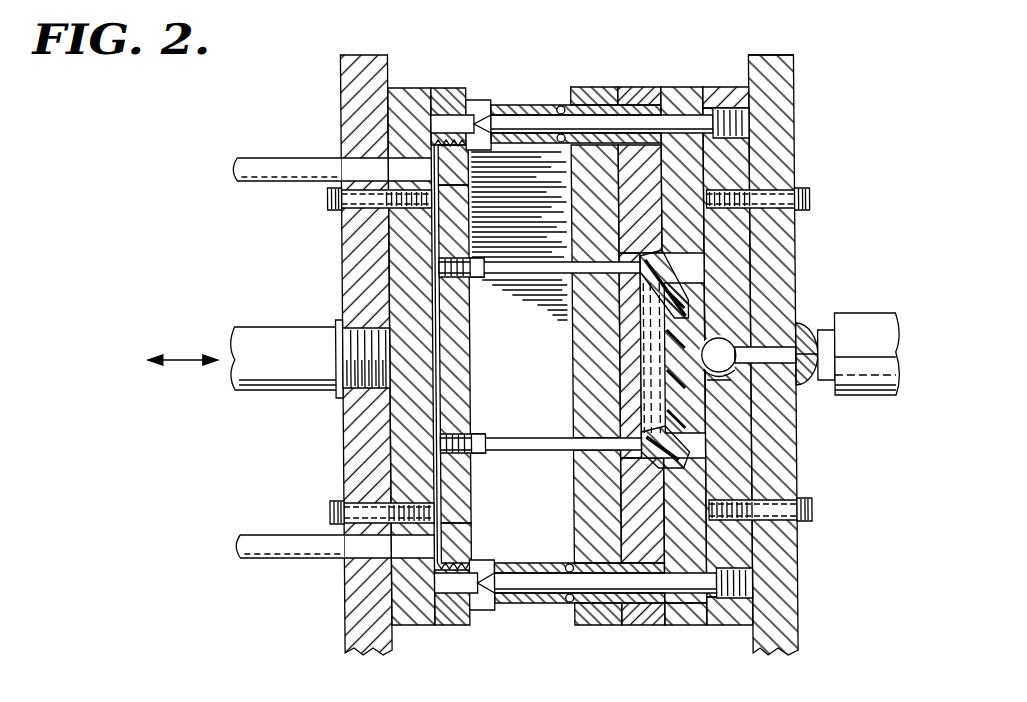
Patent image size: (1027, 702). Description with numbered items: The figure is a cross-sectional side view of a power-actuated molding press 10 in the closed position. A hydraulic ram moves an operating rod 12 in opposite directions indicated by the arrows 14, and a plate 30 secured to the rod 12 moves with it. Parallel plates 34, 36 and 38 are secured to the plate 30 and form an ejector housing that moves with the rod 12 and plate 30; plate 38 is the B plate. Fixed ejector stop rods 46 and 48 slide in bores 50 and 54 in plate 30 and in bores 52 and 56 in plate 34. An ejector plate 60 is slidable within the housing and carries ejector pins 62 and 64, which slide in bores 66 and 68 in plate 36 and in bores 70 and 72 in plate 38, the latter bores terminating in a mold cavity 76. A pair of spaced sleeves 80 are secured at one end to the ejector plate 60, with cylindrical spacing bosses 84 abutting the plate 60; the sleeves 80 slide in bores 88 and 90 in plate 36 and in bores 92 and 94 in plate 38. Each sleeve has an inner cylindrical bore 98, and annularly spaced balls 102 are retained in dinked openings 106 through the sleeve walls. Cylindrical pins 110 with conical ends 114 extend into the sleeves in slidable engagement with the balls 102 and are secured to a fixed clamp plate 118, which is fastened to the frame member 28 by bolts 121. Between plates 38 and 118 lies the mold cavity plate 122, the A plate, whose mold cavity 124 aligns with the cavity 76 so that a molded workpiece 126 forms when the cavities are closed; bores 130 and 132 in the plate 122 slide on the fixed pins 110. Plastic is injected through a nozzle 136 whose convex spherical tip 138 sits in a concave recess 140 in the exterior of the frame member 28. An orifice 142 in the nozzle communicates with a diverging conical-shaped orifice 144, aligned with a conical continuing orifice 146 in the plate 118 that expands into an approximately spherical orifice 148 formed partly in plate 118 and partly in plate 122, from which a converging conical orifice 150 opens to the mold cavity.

The molding press 10 is at (867, 135).
The operating rod 12 is at (270, 340).
The arrows 14 is at (182, 355).
The frame member 28 is at (795, 100).
The plate 30 is at (356, 74).
The parallel plate 34 is at (396, 92).
The parallel plate 36 is at (583, 95).
The parallel plate 38 is at (680, 100).
The ejector stop rod 46 is at (278, 165).
The ejector stop rod 48 is at (292, 540).
The bore 50 is at (360, 165).
The bore 52 is at (408, 170).
The bore 54 is at (357, 562).
The bore 56 is at (400, 552).
The ejector plate 60 is at (467, 357).
The ejector pin 62 is at (522, 268).
The ejector pin 64 is at (497, 437).
The bore 66 is at (600, 240).
The bore 68 is at (585, 445).
The bore 70 is at (655, 232).
The bore 72 is at (625, 448).
The mold cavity 76 is at (665, 445).
The sleeve 80 is at (512, 118).
The cylindrical spacing boss 84 is at (448, 170).
The bore 88 is at (635, 95).
The bore 90 is at (590, 605).
The bore 92 is at (683, 120).
The bore 94 is at (640, 605).
The inner cylindrical bore 98 is at (445, 128).
The ball 102 is at (560, 143).
The opening 106 is at (560, 108).
The pin 110 is at (500, 132).
The conical end 114 is at (485, 128).
The clamp plate 118 is at (777, 62).
The bolt 121 is at (805, 193).
The mold cavity plate 122 is at (690, 612).
The mold cavity 124 is at (715, 450).
The molded workpiece 126 is at (690, 270).
The bore 130 is at (720, 100).
The bore 132 is at (690, 598).
The nozzle 136 is at (835, 312).
The convex spherical tip 138 is at (820, 333).
The concave recess 140 is at (808, 378).
The orifice 142 is at (835, 357).
The diverging conical-shaped orifice 144 is at (758, 352).
The conical continuing orifice 146 is at (738, 360).
The spherical orifice 148 is at (713, 385).
The converging conical orifice 150 is at (693, 357).